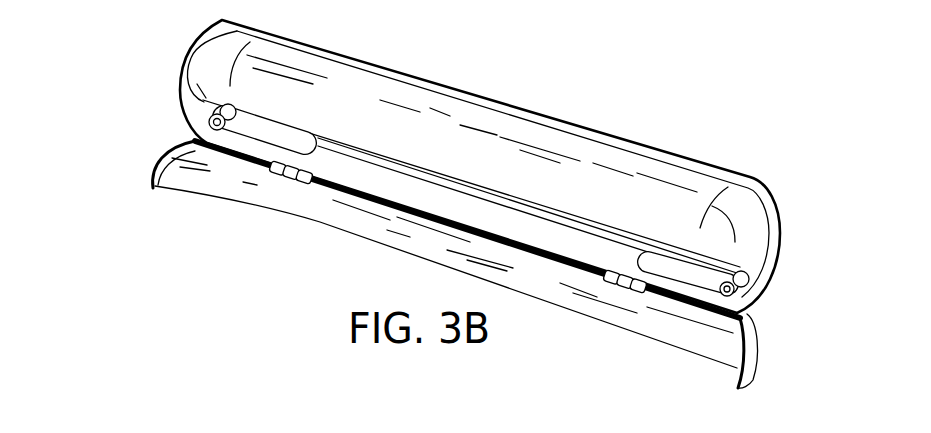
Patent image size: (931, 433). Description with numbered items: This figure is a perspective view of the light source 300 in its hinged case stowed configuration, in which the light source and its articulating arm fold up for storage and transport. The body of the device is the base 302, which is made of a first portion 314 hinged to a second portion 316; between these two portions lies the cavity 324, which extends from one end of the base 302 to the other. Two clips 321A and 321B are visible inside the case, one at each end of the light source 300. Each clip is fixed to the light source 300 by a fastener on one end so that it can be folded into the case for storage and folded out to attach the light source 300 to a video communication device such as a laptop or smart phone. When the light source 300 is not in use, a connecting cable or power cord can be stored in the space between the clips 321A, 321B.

The light source 300 is at (513, 218).
The base 302 is at (516, 194).
The first portion 314 is at (768, 207).
The second portion 316 is at (748, 373).
The clip 321A is at (250, 136).
The clip 321B is at (758, 305).
The cavity 324 is at (338, 185).